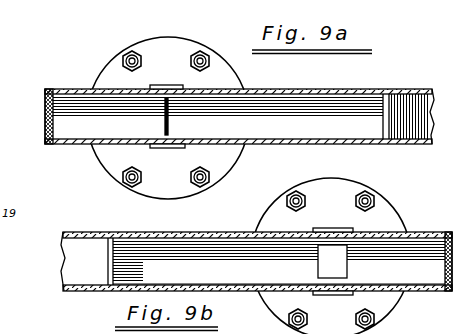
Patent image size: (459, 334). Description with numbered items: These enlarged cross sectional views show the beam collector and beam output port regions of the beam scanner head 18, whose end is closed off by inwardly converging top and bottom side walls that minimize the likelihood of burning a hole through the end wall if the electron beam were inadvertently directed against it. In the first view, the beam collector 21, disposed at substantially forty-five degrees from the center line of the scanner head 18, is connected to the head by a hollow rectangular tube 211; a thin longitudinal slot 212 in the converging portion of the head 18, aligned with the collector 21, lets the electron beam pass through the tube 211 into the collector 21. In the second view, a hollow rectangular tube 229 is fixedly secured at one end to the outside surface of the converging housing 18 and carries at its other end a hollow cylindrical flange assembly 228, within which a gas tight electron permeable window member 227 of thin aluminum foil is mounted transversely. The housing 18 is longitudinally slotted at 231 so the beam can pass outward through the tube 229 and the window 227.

In FIG. 9A, the scanner head 18 is at (344, 89).
In FIG. 9B, the scanner head 18 is at (208, 232).
In FIG. 9A, the beam collector 21 is at (165, 37).
In FIG. 9A, the hollow rectangular tube 211 is at (161, 86).
In FIG. 9A, the thin longitudinal slot 212 is at (170, 125).
In FIG. 9B, the electron permeable window member 227 is at (279, 275).
In FIG. 9B, the hollow cylindrical flange assembly 228 is at (400, 222).
In FIG. 9B, the hollow rectangular tube 229 is at (328, 229).
In FIG. 9B, the longitudinal slot 231 is at (348, 272).